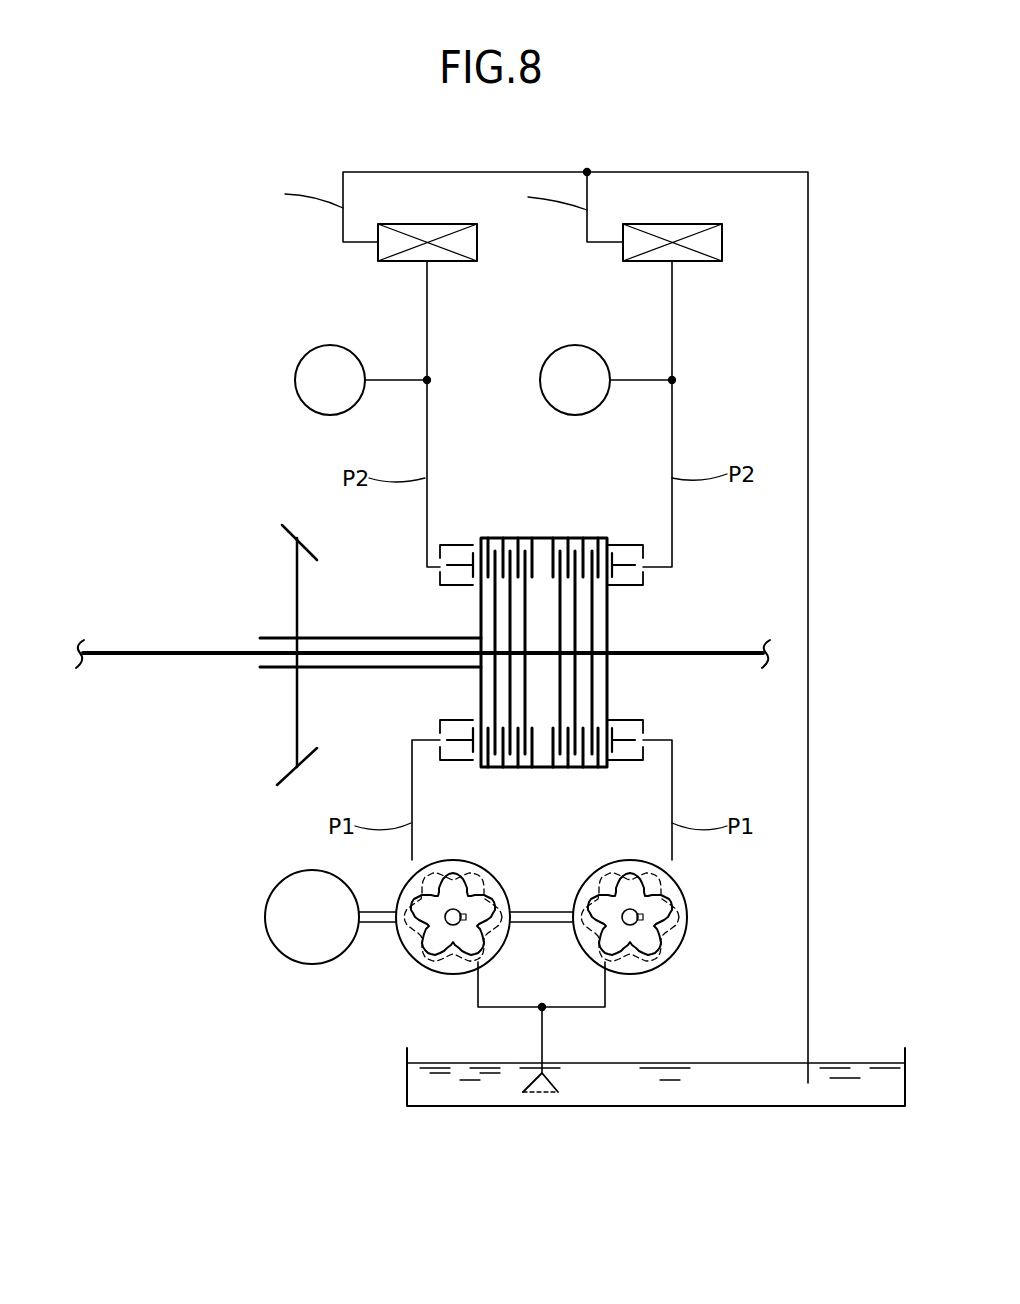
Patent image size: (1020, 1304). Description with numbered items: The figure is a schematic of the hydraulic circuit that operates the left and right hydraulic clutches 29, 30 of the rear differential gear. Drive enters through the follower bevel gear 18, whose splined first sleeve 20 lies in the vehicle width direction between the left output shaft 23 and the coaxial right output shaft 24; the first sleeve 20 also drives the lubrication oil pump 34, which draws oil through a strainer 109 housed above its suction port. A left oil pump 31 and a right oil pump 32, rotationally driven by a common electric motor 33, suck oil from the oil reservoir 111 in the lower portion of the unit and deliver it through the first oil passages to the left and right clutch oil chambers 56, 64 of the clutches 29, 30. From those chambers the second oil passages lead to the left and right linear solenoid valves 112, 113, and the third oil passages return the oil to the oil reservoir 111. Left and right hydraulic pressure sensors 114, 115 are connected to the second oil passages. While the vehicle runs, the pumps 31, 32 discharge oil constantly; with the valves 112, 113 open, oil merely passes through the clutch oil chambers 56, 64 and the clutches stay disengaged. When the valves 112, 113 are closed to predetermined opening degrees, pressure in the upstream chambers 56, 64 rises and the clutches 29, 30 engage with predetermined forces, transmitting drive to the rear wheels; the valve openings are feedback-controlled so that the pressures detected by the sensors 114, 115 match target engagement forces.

The follower bevel gear 18 is at (283, 528).
The first sleeve 20 is at (390, 637).
The left output shaft 23 is at (180, 650).
The right output shaft 24 is at (713, 651).
The left hydraulic clutch 29 is at (513, 525).
The right hydraulic clutch 30 is at (572, 525).
The left oil pump 31 is at (432, 972).
The right oil pump 32 is at (656, 967).
The electric motor 33 is at (330, 917).
The lubrication oil pump 34 is at (232, 365).
The left clutch oil chamber 56 is at (456, 724).
The right clutch oil chamber 64 is at (631, 724).
The strainer 109 is at (553, 1083).
The oil reservoir 111 is at (407, 1078).
The left linear solenoid valve 112 is at (455, 262).
The right linear solenoid valve 113 is at (698, 262).
The left hydraulic pressure sensor 114 is at (363, 380).
The right hydraulic pressure sensor 115 is at (608, 380).